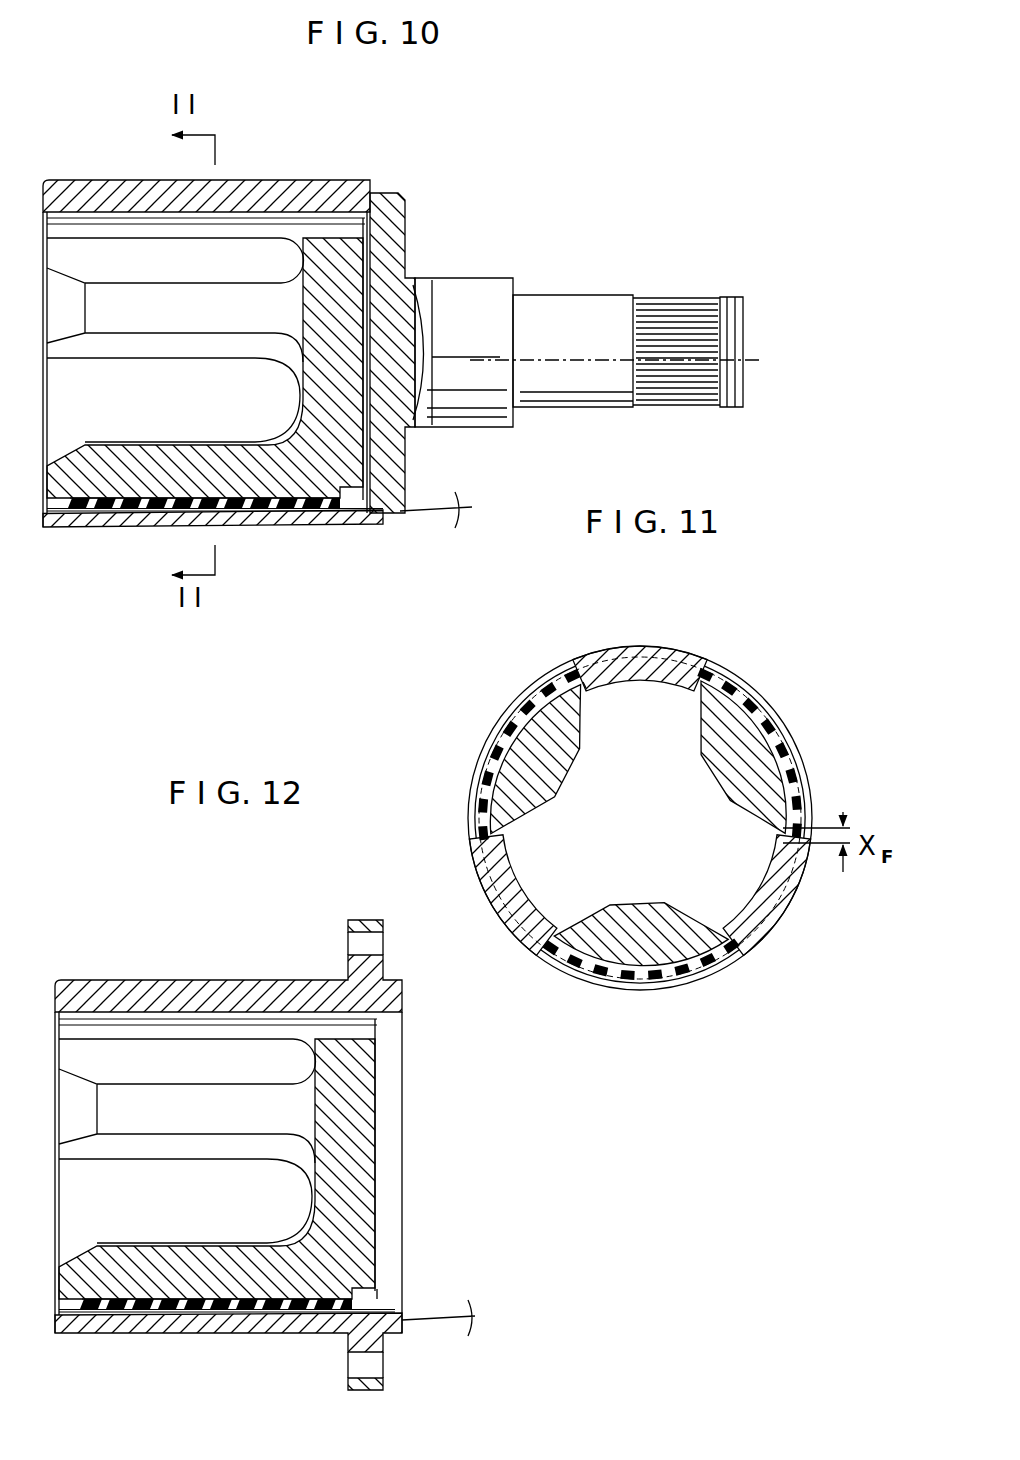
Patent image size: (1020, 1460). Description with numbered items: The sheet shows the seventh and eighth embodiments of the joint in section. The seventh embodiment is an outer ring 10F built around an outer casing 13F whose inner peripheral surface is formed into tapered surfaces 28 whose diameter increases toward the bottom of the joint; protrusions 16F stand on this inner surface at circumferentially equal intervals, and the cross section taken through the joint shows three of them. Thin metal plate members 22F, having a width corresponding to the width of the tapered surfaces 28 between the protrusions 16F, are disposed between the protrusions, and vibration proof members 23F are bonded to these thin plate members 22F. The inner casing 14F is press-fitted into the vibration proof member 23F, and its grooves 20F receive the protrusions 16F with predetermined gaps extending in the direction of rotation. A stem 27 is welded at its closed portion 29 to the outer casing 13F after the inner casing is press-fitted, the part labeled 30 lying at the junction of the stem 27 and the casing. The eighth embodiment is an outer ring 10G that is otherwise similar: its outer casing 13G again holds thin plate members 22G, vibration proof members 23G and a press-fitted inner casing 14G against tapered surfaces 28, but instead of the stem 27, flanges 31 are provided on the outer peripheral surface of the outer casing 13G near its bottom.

In FIG. 10, the constant velocity joint (F embodiment) 10F is at (352, 178).
In FIG. 10, the outer casing 13F is at (287, 192).
In FIG. 11, the outer casing 13F is at (482, 762).
In FIG. 10, the flange 30 is at (388, 196).
In FIG. 10, the closed portion 29 is at (392, 242).
In FIG. 10, the stem 27 is at (588, 322).
In FIG. 10, the inner casing 14F is at (105, 482).
In FIG. 11, the inner casing 14F is at (508, 720).
In FIG. 10, the tapered surface 28 is at (138, 506).
In FIG. 12, the tapered surface 28 is at (155, 1312).
In FIG. 10, the vibration proof member 23F is at (277, 500).
In FIG. 11, the vibration proof member 23F is at (478, 804).
In FIG. 10, the thin metal plate member 22F is at (352, 516).
In FIG. 11, the thin metal plate member 22F is at (537, 681).
In FIG. 11, the protrusion 16F is at (673, 658).
In FIG. 11, the gap / clearance 20F is at (575, 672).
In FIG. 12, the constant velocity joint (G embodiment) 10G is at (258, 975).
In FIG. 12, the outer casing 13G is at (163, 980).
In FIG. 12, the flange 31 is at (362, 922).
In FIG. 12, the inner race 14G is at (118, 1282).
In FIG. 12, the cage 22G is at (232, 1312).
In FIG. 12, the balls 23G is at (298, 1312).